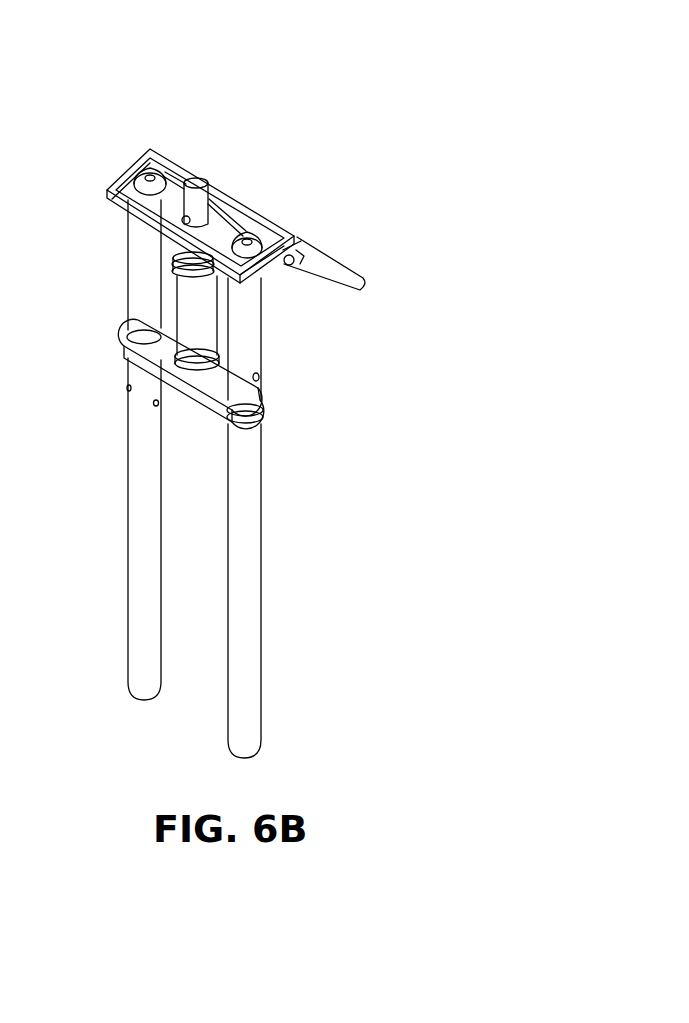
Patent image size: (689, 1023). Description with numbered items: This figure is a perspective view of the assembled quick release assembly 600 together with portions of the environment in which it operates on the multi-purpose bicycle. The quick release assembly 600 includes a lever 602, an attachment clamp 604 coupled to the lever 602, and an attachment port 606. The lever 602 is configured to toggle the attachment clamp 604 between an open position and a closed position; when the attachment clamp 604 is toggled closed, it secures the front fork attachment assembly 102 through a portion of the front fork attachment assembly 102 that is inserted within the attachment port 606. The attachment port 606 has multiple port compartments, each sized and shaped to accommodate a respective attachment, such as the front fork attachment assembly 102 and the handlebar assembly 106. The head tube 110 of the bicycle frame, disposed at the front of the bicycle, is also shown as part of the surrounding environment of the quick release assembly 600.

The quick release assembly 600 is at (420, 228).
The lever 602 is at (312, 258).
The attachment clamp 604 is at (108, 194).
The attachment port 606 is at (258, 323).
The handlebar assembly 106 is at (206, 193).
The head tube 110 is at (187, 300).
The front fork attachment assembly 102 is at (257, 488).